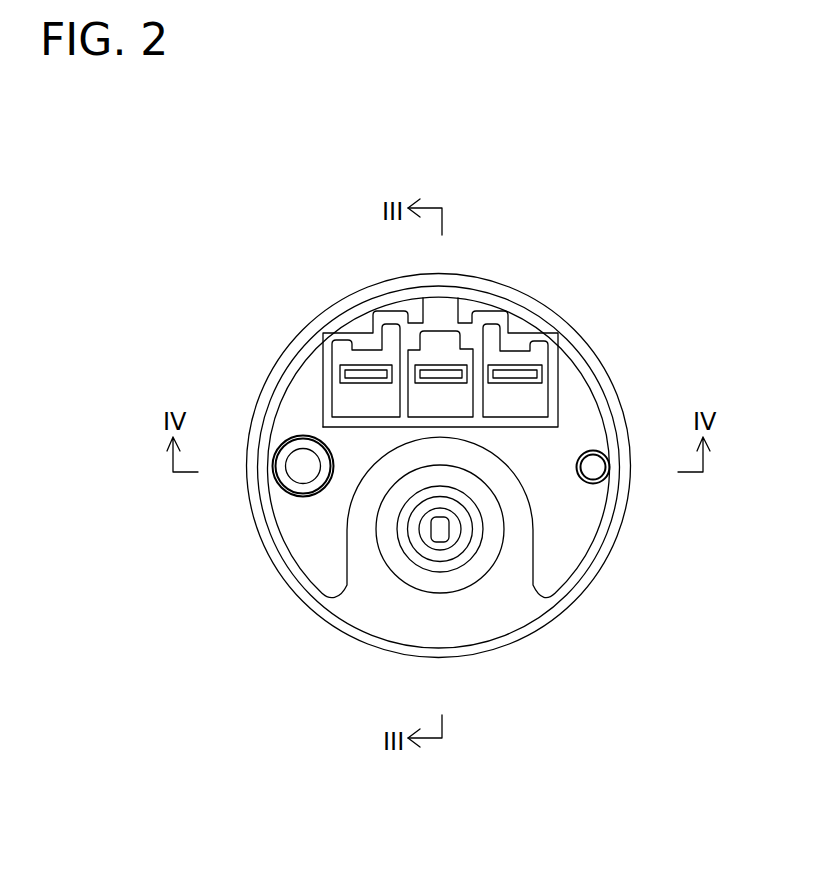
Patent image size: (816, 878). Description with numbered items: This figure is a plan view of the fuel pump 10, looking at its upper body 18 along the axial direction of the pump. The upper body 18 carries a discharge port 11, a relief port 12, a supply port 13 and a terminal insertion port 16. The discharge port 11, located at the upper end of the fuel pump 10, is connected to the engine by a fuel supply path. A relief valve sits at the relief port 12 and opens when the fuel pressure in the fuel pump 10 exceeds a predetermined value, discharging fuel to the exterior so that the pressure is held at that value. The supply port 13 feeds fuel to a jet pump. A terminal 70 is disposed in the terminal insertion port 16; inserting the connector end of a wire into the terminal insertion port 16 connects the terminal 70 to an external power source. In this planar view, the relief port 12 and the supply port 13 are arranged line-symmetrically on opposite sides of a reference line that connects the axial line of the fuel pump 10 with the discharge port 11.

The fuel pump 10 is at (466, 144).
The discharge port 11 is at (435, 550).
The relief port 12 is at (303, 464).
The supply port 13 is at (593, 465).
The terminal insertion port 16 is at (556, 372).
The upper body 18 is at (306, 300).
The terminal 70 is at (366, 365).